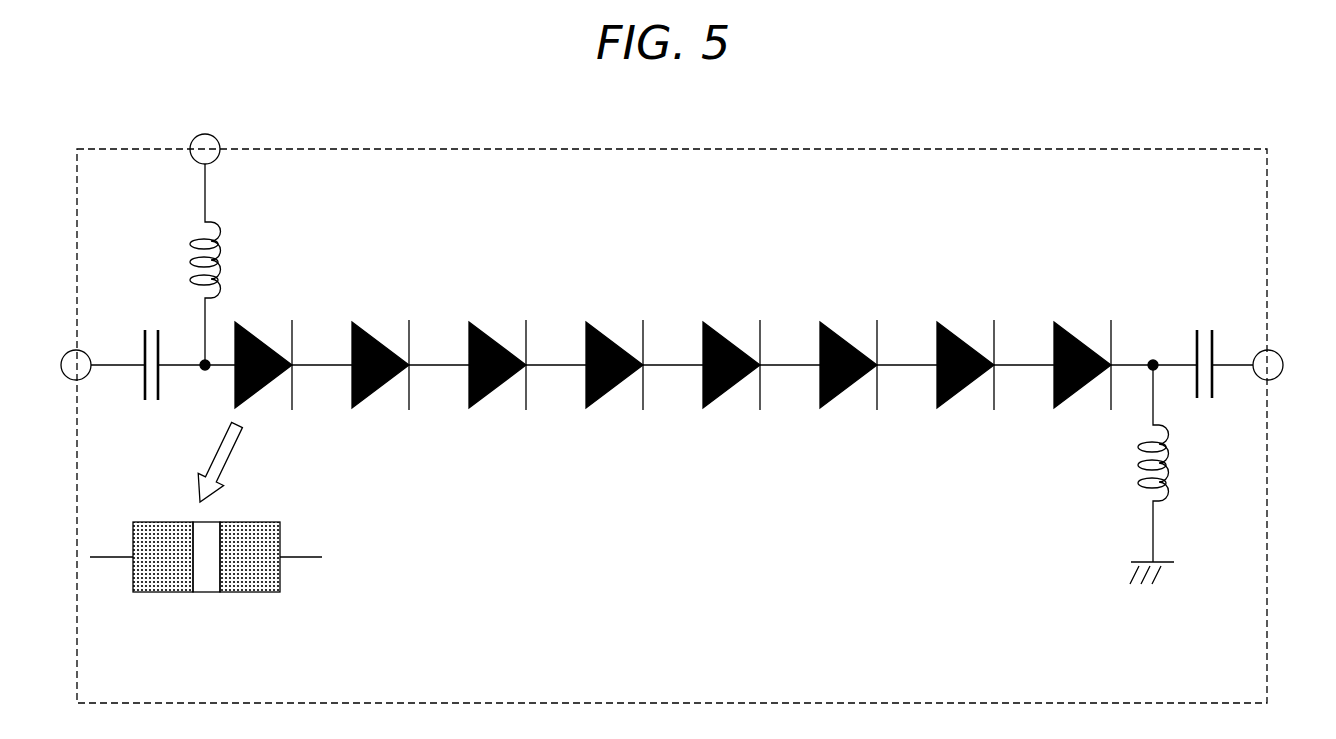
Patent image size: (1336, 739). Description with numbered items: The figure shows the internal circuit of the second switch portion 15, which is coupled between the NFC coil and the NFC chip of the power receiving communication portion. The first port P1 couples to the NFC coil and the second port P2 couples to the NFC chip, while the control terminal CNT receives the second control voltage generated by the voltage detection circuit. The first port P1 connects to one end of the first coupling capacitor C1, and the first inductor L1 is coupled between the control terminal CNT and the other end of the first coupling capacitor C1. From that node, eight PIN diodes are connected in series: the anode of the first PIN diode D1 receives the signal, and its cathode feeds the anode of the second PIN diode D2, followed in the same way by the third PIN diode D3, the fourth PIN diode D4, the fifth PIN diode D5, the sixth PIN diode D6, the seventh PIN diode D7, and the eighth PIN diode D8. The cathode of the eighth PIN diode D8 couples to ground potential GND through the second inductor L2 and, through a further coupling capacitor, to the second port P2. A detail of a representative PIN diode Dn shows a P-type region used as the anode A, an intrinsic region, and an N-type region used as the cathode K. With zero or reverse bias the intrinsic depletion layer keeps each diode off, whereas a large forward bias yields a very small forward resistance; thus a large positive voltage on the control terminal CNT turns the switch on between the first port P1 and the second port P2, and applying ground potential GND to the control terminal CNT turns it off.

The second switch portion 15 is at (1110, 149).
The control terminal CNT is at (215, 138).
The first port P1 is at (70, 379).
The second port P2 is at (1276, 379).
The first coupling capacitor C1 is at (679, 385).
The first inductor L1 is at (187, 267).
The second inductor L2 is at (1135, 461).
The first PIN diode D1 is at (263, 346).
The second PIN diode D2 is at (380, 346).
The third PIN diode D3 is at (497, 346).
The fourth PIN diode D4 is at (614, 346).
The fifth PIN diode D5 is at (731, 346).
The sixth PIN diode D6 is at (848, 346).
The seventh PIN diode D7 is at (965, 346).
The eighth PIN diode D8 is at (1082, 346).
The ground potential GND is at (1151, 593).
The PIN diode Dn is at (206, 573).
The anode A is at (150, 592).
The cathode K is at (270, 522).